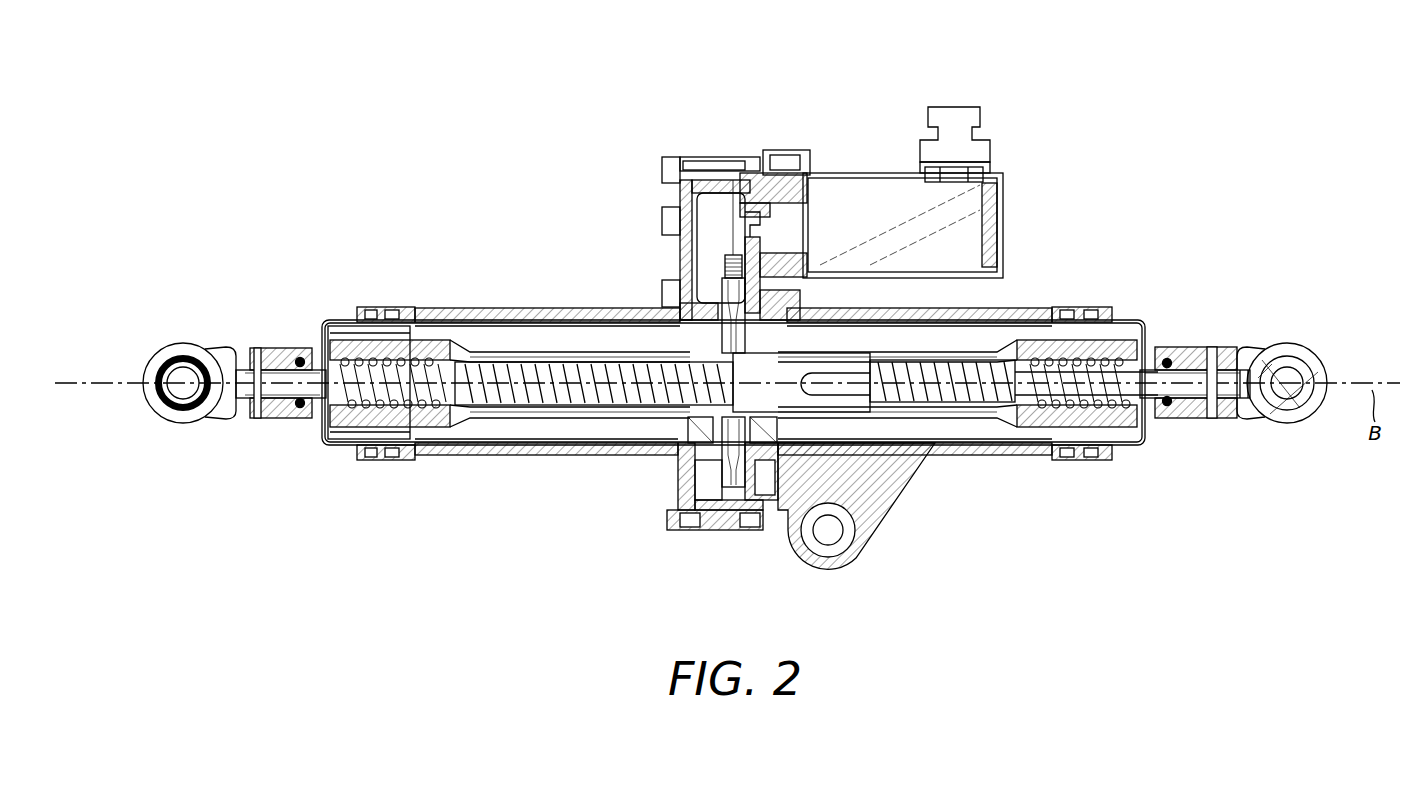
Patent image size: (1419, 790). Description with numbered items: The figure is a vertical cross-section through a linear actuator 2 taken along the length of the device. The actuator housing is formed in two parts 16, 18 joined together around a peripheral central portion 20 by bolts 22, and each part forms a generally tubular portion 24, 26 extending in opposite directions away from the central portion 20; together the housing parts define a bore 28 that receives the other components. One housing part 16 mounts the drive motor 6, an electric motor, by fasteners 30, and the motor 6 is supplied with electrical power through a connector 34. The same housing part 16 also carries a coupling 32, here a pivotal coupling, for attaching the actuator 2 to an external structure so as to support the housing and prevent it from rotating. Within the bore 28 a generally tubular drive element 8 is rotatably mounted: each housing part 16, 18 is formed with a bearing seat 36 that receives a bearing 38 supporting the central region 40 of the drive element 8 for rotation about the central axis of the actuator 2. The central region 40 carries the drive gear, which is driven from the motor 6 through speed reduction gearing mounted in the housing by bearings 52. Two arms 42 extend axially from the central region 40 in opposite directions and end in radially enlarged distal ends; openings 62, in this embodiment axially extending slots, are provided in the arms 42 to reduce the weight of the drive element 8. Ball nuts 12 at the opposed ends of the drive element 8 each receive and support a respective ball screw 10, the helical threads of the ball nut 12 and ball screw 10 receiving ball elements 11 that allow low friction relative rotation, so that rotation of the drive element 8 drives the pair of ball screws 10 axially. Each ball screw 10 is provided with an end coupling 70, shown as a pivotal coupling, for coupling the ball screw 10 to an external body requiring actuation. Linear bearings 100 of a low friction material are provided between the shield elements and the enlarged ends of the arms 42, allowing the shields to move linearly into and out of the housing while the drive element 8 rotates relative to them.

The linear actuator 2 is at (1190, 289).
The drive motor 6 is at (878, 196).
The drive element 8 is at (400, 338).
The ball screws 10 is at (545, 406).
The ball elements 11 is at (340, 352).
The ball nuts 12 is at (415, 424).
The actuator housing part 16 is at (978, 457).
The actuator housing part 18 is at (605, 457).
The peripheral central portion 20 is at (685, 139).
The bolts 22 is at (662, 170).
The tubular portion 24 is at (458, 318).
The tubular portion 26 is at (893, 306).
The bore 28 is at (518, 333).
The fasteners 30 is at (800, 152).
The coupling 32 is at (830, 552).
The connector 34 is at (953, 105).
The bearing seat 36 is at (685, 472).
The bearing 38 is at (731, 487).
The central region 40 is at (675, 345).
The arms 42 is at (465, 428).
The bearings 52 is at (725, 267).
The openings 62 is at (578, 355).
The end coupling 70 is at (185, 424).
The linear bearings 100 is at (347, 328).